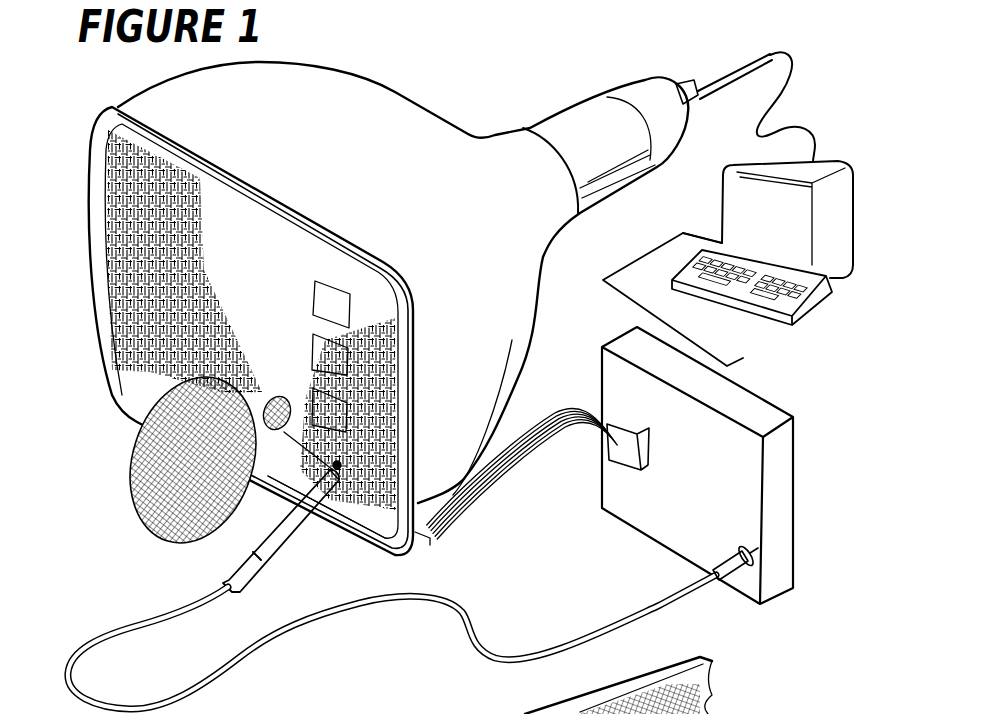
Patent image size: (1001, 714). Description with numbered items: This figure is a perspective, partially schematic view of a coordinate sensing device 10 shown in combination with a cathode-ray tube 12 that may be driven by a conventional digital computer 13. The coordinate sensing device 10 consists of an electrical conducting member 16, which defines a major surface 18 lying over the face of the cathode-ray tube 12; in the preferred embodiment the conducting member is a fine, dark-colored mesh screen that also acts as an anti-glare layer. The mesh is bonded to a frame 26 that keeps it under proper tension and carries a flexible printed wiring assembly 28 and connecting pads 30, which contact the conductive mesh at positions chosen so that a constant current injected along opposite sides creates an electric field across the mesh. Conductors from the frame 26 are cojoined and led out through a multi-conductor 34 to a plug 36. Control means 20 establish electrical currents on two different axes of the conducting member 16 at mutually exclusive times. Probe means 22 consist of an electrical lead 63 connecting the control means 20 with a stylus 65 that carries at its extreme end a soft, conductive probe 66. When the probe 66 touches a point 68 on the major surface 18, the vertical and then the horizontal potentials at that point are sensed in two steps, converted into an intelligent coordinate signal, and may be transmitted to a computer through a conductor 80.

The coordinate sensing device 10 is at (120, 413).
The cathode-ray tube 12 is at (389, 83).
The digital computer 13 is at (805, 122).
The electrical conducting member 16 is at (193, 345).
The major surface 18 is at (277, 341).
The control means 20 is at (613, 330).
The probe means 22 is at (238, 560).
The frame 26 is at (364, 540).
The wiring assembly 28 is at (573, 713).
The connecting pads 30 is at (587, 685).
The multi-conductor 34 is at (552, 444).
The plug 36 is at (619, 440).
The electrical lead 63 is at (254, 658).
The stylus 65 is at (248, 562).
The probe 66 is at (330, 484).
The point 68 is at (341, 462).
The conductor 80 is at (726, 345).